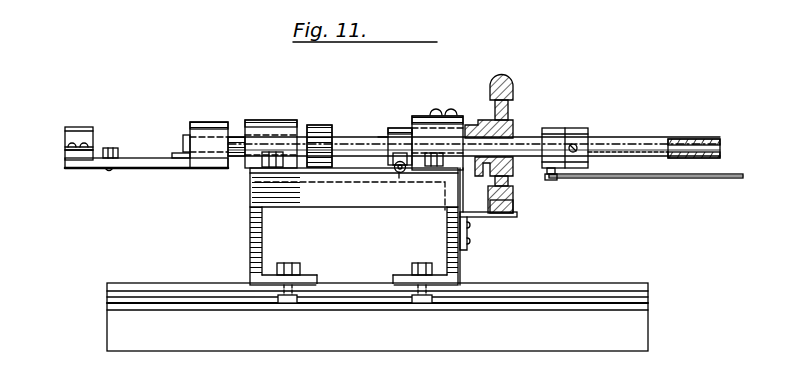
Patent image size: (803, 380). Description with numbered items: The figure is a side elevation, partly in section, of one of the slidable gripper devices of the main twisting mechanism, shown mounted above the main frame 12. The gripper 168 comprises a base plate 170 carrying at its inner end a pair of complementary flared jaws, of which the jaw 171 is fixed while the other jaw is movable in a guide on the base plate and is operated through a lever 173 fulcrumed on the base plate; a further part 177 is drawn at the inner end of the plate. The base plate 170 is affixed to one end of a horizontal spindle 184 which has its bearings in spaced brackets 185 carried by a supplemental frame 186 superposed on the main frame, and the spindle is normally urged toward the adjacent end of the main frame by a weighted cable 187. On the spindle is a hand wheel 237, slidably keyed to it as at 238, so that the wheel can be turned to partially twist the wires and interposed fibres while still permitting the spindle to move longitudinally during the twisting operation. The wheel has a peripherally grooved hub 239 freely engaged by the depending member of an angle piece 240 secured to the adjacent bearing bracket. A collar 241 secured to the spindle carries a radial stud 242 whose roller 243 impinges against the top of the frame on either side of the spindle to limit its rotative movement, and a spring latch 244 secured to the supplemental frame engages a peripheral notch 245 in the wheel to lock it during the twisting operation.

The bed rail / shaft 12 is at (378, 137).
The wire gripper 168 is at (67, 127).
The base plate 170 is at (152, 170).
The fixed jaw 171 is at (77, 156).
The stop 173 is at (134, 157).
The bearing block 177 is at (208, 122).
The horizontal spindle 184 is at (700, 139).
The bearing brackets 185 is at (275, 120).
The supplemental frame 186 is at (253, 193).
The weighted cable 187 is at (735, 179).
The hand wheel 237 is at (508, 80).
The sliding key 238 is at (518, 132).
The peripherally grooved hub 239 is at (490, 182).
The angle piece 240 is at (442, 113).
The collar 241 is at (388, 140).
The radial stud 242 is at (400, 150).
The roller 243 is at (398, 174).
The spring latch 244 is at (486, 215).
The peripheral notch 245 is at (517, 205).